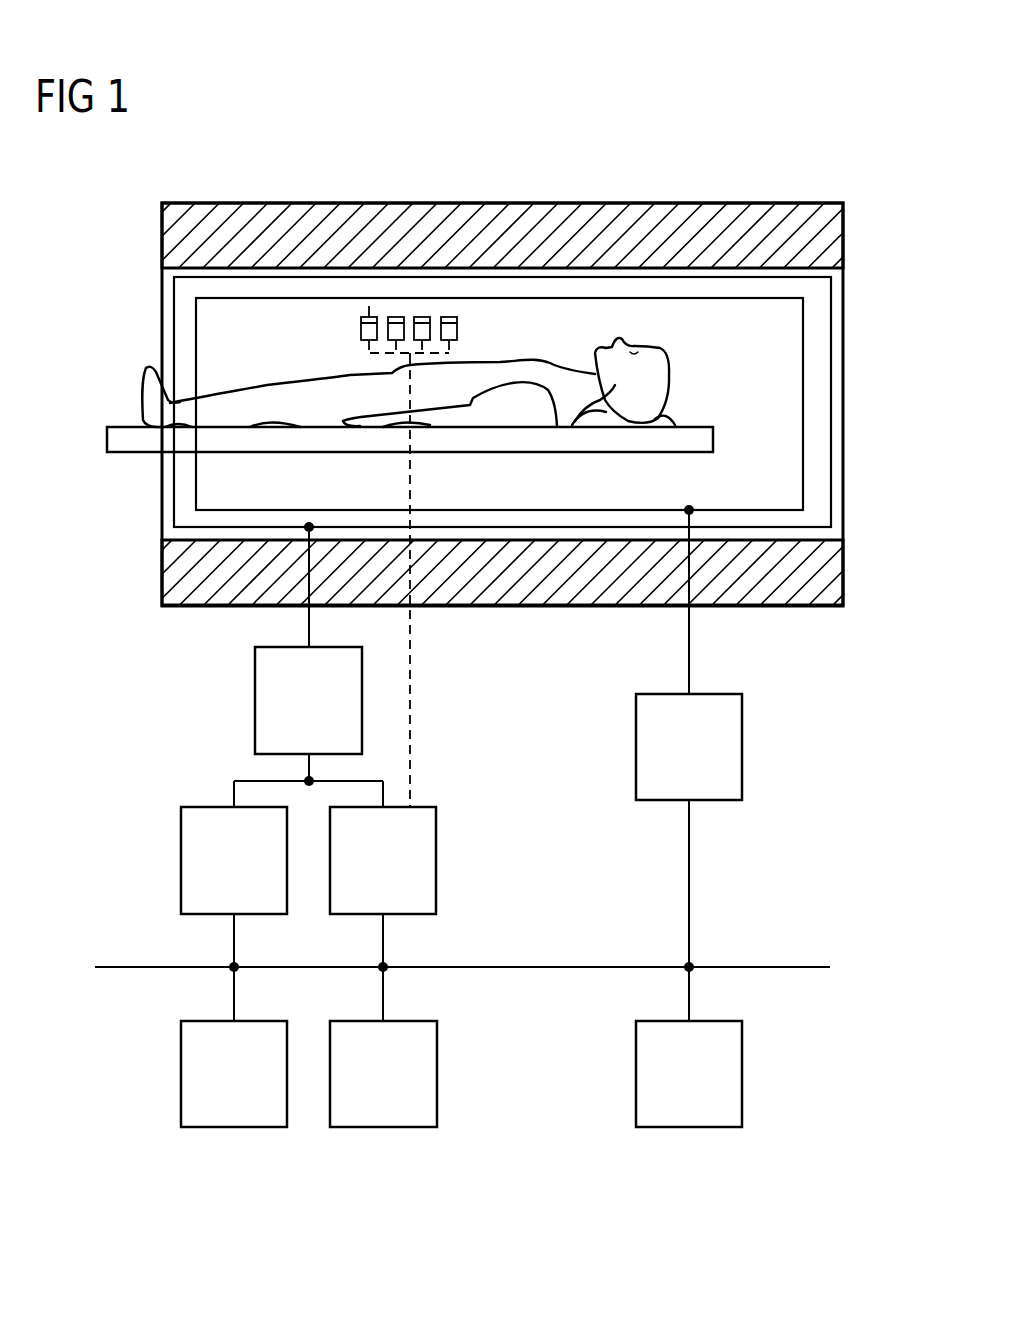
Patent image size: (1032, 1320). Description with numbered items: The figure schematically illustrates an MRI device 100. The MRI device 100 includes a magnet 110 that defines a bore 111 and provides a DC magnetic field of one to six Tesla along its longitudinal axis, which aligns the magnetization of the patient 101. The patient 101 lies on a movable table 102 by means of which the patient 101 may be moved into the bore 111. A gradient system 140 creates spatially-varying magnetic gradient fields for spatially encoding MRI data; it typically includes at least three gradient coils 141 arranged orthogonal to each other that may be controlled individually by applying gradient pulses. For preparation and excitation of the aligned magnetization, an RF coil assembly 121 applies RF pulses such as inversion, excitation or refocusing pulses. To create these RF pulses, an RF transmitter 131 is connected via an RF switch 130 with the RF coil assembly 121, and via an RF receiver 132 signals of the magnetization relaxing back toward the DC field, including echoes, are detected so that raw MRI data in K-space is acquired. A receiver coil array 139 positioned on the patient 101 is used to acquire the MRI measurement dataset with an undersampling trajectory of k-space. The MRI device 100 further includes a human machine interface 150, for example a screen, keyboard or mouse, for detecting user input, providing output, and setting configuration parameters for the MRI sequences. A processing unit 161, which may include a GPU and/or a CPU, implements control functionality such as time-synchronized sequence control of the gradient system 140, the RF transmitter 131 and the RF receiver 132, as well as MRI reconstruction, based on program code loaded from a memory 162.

The MRI device 100 is at (776, 153).
The patient 101 is at (147, 368).
The movable table 102 is at (118, 441).
The magnet 110 is at (503, 212).
The bore 111 is at (829, 270).
The RF coil assembly 121 is at (831, 390).
The RF switch 130 is at (255, 701).
The RF transmitter 131 is at (181, 861).
The RF receiver 132 is at (437, 861).
The receiver coil array 139 is at (490, 337).
The gradient system 140 is at (636, 746).
The gradient coils 141 is at (803, 478).
The human machine interface 150 is at (181, 1073).
The processing unit 161 is at (437, 1073).
The memory 162 is at (636, 1073).